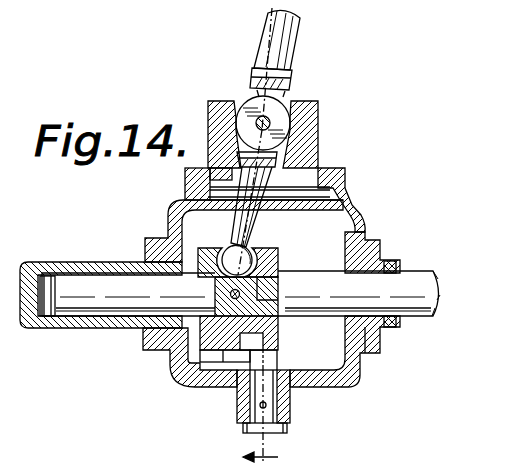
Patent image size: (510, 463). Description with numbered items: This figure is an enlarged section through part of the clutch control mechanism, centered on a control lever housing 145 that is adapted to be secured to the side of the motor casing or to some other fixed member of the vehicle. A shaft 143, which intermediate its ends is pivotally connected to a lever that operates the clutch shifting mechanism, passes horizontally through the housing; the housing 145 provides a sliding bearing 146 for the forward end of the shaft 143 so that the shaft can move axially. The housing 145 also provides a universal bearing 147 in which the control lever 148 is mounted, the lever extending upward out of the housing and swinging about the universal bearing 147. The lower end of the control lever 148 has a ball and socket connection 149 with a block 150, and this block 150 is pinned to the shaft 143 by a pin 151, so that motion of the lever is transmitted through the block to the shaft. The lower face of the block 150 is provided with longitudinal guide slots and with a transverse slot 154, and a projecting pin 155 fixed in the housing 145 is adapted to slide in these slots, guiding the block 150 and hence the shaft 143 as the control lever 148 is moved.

The shaft 143 is at (419, 274).
The control lever housing 145 is at (357, 215).
The sliding bearing 146 is at (115, 318).
The universal bearing 147 is at (291, 121).
The control lever 148 is at (291, 44).
The ball and socket connection 149 is at (251, 257).
The block 150 is at (272, 327).
The pin 151 is at (230, 291).
The transverse slot 154 is at (235, 354).
The projecting pin 155 is at (276, 358).